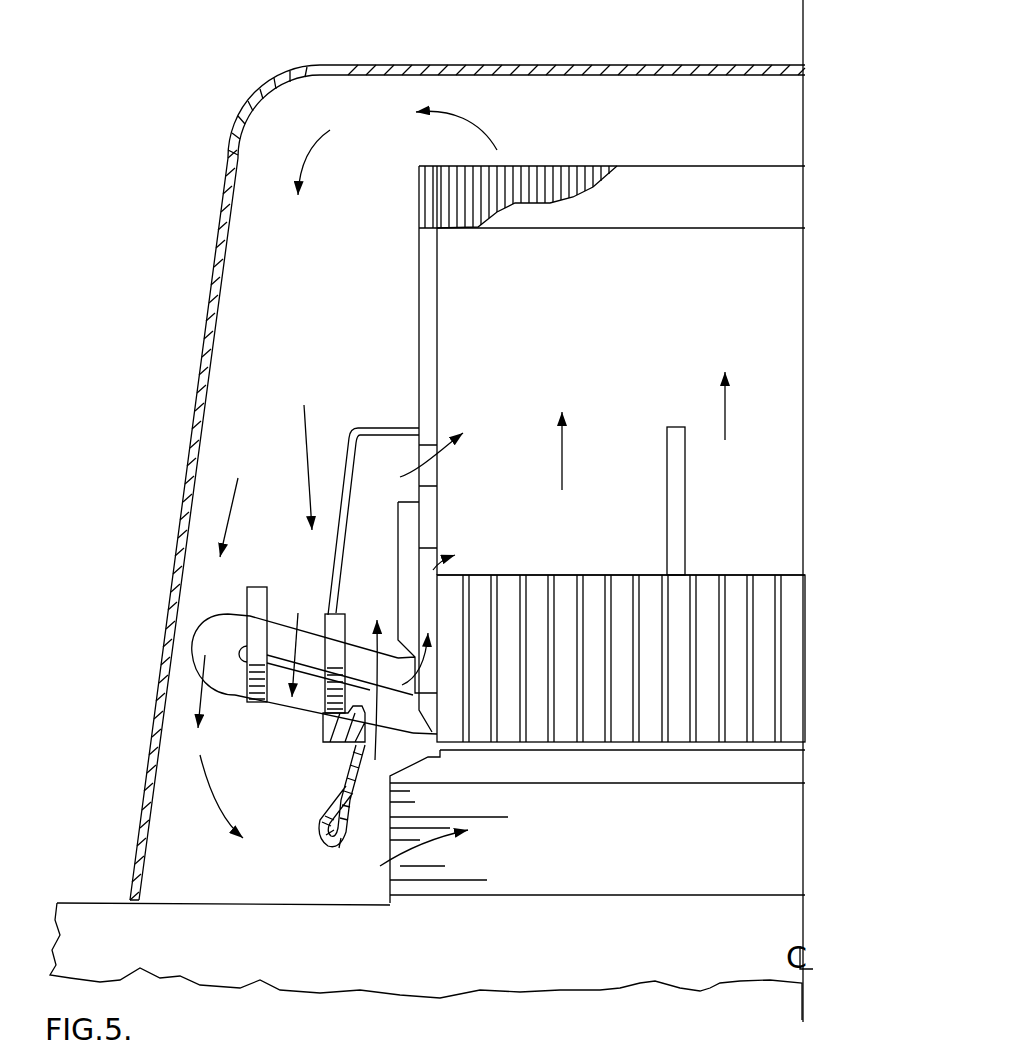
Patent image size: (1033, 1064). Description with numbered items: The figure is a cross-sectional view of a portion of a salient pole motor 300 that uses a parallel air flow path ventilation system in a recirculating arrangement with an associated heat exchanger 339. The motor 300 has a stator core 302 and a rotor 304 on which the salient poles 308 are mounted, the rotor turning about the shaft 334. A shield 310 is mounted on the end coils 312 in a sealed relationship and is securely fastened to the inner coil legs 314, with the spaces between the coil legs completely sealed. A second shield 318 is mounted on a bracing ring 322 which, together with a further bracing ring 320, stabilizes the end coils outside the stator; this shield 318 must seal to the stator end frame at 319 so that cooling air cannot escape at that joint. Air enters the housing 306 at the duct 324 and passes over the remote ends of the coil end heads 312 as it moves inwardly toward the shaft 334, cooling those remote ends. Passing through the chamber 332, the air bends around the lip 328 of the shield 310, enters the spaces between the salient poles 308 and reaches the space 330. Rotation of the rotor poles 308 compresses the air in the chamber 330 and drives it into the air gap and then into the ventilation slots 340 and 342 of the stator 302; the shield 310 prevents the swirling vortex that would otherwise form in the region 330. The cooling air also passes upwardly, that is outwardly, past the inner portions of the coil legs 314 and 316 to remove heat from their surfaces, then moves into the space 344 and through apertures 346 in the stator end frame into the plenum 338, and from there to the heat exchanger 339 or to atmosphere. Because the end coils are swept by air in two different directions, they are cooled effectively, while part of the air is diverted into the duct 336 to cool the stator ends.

The salient pole motor 300 is at (502, 1031).
The stator core 302 is at (675, 648).
The rotor 304 is at (765, 928).
The housing 306 is at (186, 392).
The salient poles 308 is at (780, 832).
The shield 310 is at (340, 787).
The end coils 312 is at (230, 620).
The inner coil legs 314 is at (308, 706).
The coil legs 316 is at (278, 630).
The shield 318 is at (352, 430).
The stator end frame seal 319 is at (418, 428).
The bracing ring 320 is at (247, 588).
The bracing ring 322 is at (312, 597).
The duct 324 is at (356, 257).
The lip 328 is at (333, 845).
The space 330 is at (378, 745).
The chamber 332 is at (267, 781).
The shaft 334 is at (180, 935).
The duct 336 is at (405, 645).
The plenum 338 is at (652, 338).
The heat exchanger 339 is at (648, 186).
The ventilation slot 340 is at (463, 573).
The ventilation slot 342 is at (495, 573).
The space 344 is at (400, 535).
The apertures 346 is at (430, 458).